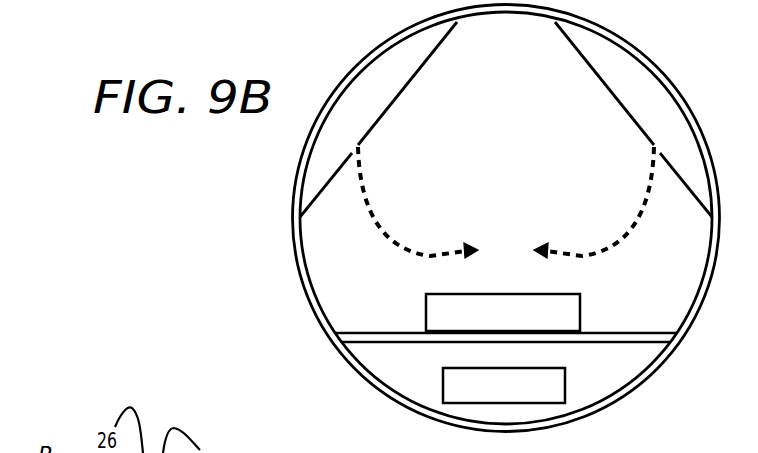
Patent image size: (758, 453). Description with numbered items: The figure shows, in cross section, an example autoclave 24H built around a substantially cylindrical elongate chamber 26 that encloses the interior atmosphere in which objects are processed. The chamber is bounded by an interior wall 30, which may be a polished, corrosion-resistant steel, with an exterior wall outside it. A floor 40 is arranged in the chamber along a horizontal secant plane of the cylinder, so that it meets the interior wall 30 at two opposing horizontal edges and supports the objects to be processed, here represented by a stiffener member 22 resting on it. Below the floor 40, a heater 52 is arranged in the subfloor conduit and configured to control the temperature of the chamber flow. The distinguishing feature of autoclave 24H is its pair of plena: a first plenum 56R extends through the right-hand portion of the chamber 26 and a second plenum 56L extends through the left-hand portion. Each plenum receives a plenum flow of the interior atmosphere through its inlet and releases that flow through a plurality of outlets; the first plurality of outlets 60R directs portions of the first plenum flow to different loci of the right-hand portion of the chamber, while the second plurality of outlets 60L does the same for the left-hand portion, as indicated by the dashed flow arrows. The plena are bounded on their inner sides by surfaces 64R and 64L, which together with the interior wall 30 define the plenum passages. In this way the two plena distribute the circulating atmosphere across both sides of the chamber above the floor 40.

The autoclave 24H is at (522, 229).
The elongate chamber 26 is at (690, 102).
The interior wall 30 is at (695, 297).
The left upper guide panel 64L is at (398, 95).
The right upper guide panel 64R is at (613, 95).
The second plenum 56L is at (372, 123).
The first plenum 56R is at (671, 123).
The second plurality of outlets 60L is at (378, 155).
The first plurality of outlets 60R is at (634, 155).
The floor 40 is at (397, 332).
The stiffener member 22 is at (492, 323).
The heater 52 is at (492, 396).